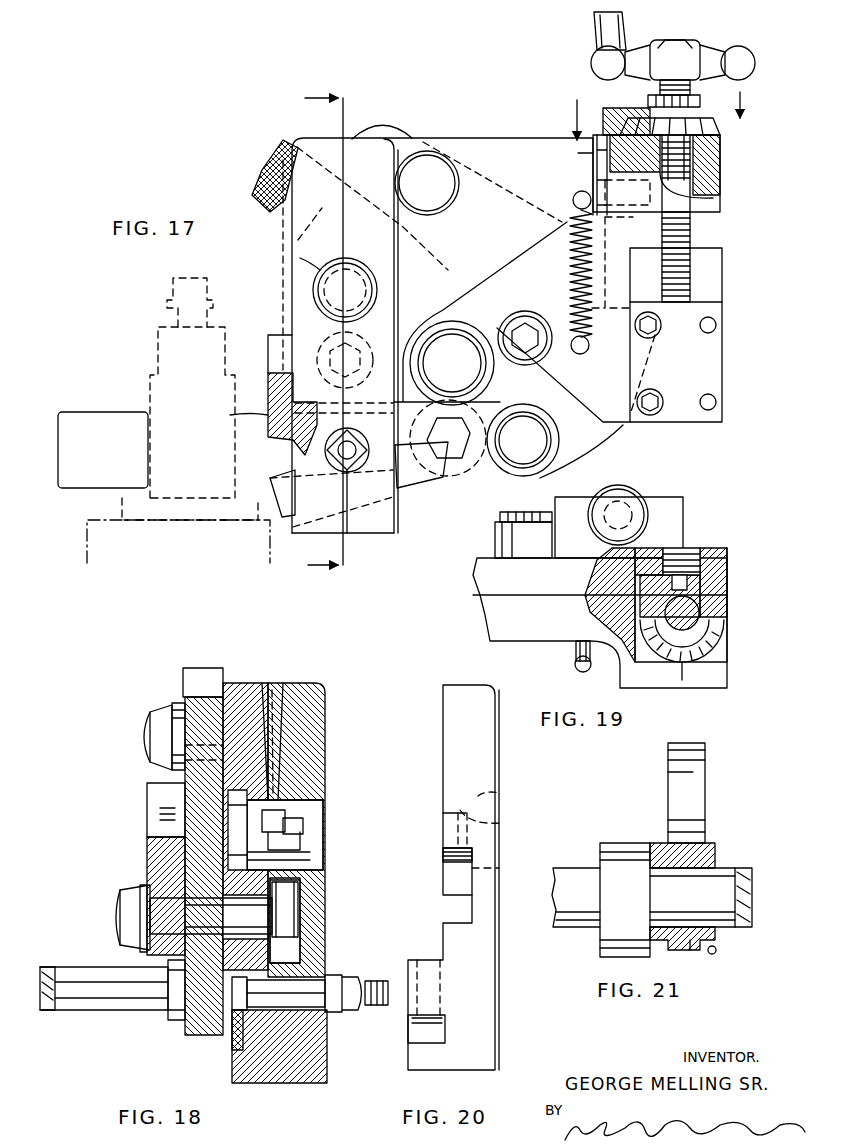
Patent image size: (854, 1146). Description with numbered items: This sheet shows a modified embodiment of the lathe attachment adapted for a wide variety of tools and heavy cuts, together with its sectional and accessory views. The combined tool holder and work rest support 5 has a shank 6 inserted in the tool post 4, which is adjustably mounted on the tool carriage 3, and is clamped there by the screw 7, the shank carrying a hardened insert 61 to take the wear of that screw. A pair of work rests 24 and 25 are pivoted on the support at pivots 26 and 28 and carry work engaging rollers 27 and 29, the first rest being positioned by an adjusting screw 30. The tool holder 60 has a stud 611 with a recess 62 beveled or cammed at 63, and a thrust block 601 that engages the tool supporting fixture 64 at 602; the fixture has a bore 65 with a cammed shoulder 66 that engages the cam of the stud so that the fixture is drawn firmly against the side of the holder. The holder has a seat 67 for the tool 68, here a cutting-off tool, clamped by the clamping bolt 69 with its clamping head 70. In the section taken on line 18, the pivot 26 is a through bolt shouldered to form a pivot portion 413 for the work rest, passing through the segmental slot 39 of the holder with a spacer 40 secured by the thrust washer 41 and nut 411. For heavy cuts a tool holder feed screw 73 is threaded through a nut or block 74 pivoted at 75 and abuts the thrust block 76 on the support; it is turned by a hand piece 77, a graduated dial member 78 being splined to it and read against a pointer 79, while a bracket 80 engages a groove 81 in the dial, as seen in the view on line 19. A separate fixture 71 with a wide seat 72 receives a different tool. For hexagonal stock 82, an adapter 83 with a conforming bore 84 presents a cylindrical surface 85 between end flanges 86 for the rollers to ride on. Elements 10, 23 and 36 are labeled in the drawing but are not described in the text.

In FIG. 17, the tool carriage 3 is at (85, 545).
In FIG. 17, the tool post 4 is at (148, 398).
In FIG. 17, the combined tool holder and work rest support 5 is at (385, 150).
In FIG. 19, the combined tool holder and work rest support 5 is at (480, 578).
In FIG. 18, the combined tool holder and work rest support 5 is at (190, 680).
In FIG. 17, the shank 6 is at (86, 420).
In FIG. 17, the screw 7 is at (195, 280).
In FIG. 17, the nut 10 is at (432, 170).
In FIG. 18, the nut 10 is at (148, 730).
In FIG. 17, the section line 18— 18 is at (310, 332).
In FIG. 17, the section line 19— 19 is at (658, 117).
In FIG. 17, the spring 23 is at (570, 282).
In FIG. 19, the spring 23 is at (570, 658).
In FIG. 17, the work rest 24 is at (442, 312).
In FIG. 18, the work rest 24 is at (150, 860).
In FIG. 17, the work rest 25 is at (637, 440).
In FIG. 19, the work rest 25 is at (510, 540).
In FIG. 18, the pivot 26 is at (142, 895).
In FIG. 17, the work engaging roller 27 is at (460, 325).
In FIG. 21, the work engaging roller 27 is at (695, 792).
In FIG. 17, the pivot 28 is at (535, 350).
In FIG. 19, the pivot 28 is at (500, 516).
In FIG. 17, the work engaging roller 29 is at (585, 453).
In FIG. 17, the adjusting screw 30 is at (268, 160).
In FIG. 19, the adjusting screw 30 is at (640, 500).
In FIG. 19, the block 36 is at (672, 530).
In FIG. 18, the segmental slot 39 is at (148, 805).
In FIG. 18, the spacer 40 is at (300, 915).
In FIG. 18, the thrust washer 41 is at (300, 895).
In FIG. 17, the tool holder 60 is at (500, 150).
In FIG. 19, the tool holder 60 is at (495, 622).
In FIG. 18, the tool holder 60 is at (262, 690).
In FIG. 17, the hardened insert 61 is at (335, 286).
In FIG. 18, the recess 62 is at (285, 828).
In FIG. 18, the bevel 63 is at (300, 822).
In FIG. 17, the tool supporting fixture 64 is at (360, 525).
In FIG. 18, the tool supporting fixture 64 is at (318, 712).
In FIG. 17, the bore 65 is at (300, 258).
In FIG. 18, the bore 65 is at (318, 846).
In FIG. 20, the bore 65 is at (490, 795).
In FIG. 17, the cammed shoulder 66 is at (318, 305).
In FIG. 18, the cammed shoulder 66 is at (280, 818).
In FIG. 20, the cammed shoulder 66 is at (500, 823).
In FIG. 18, the seat 67 is at (243, 1030).
In FIG. 17, the tool 68 is at (424, 488).
In FIG. 18, the tool 68 is at (232, 1040).
In FIG. 17, the clamping bolt 69 is at (355, 468).
In FIG. 18, the clamping bolt 69 is at (310, 985).
In FIG. 18, the clamping head 70 is at (250, 985).
In FIG. 20, the fixture 71 is at (488, 970).
In FIG. 20, the seat 72 is at (440, 1030).
In FIG. 17, the tool holder feed screw 73 is at (700, 230).
In FIG. 17, the nut or block 74 is at (722, 160).
In FIG. 19, the nut or block 74 is at (715, 598).
In FIG. 17, the pivot 75 is at (700, 197).
In FIG. 19, the pivot 75 is at (700, 578).
In FIG. 17, the thrust block 76 is at (712, 342).
In FIG. 17, the hand piece 77 is at (702, 48).
In FIG. 17, the graduated dial member 78 is at (730, 105).
In FIG. 19, the graduated dial member 78 is at (720, 627).
In FIG. 19, the pointer 79 is at (690, 665).
In FIG. 17, the bracket 80 is at (648, 101).
In FIG. 17, the groove 81 is at (700, 108).
In FIG. 17, the stock 82 is at (460, 440).
In FIG. 18, the stock 82 is at (76, 1000).
In FIG. 21, the stock 82 is at (570, 878).
In FIG. 17, the adapter 83 is at (466, 462).
In FIG. 18, the adapter 83 is at (175, 1010).
In FIG. 21, the adapter 83 is at (615, 853).
In FIG. 21, the bore 84 is at (715, 855).
In FIG. 21, the cylindrical surface 85 is at (690, 952).
In FIG. 21, the flanges 86 is at (716, 950).
In FIG. 18, the nut 411 is at (292, 892).
In FIG. 18, the pivot portion 413 is at (130, 915).
In FIG. 17, the thrust block 601 is at (282, 432).
In FIG. 17, the engagement point 602 is at (227, 419).
In FIG. 18, the stud 611 is at (255, 820).